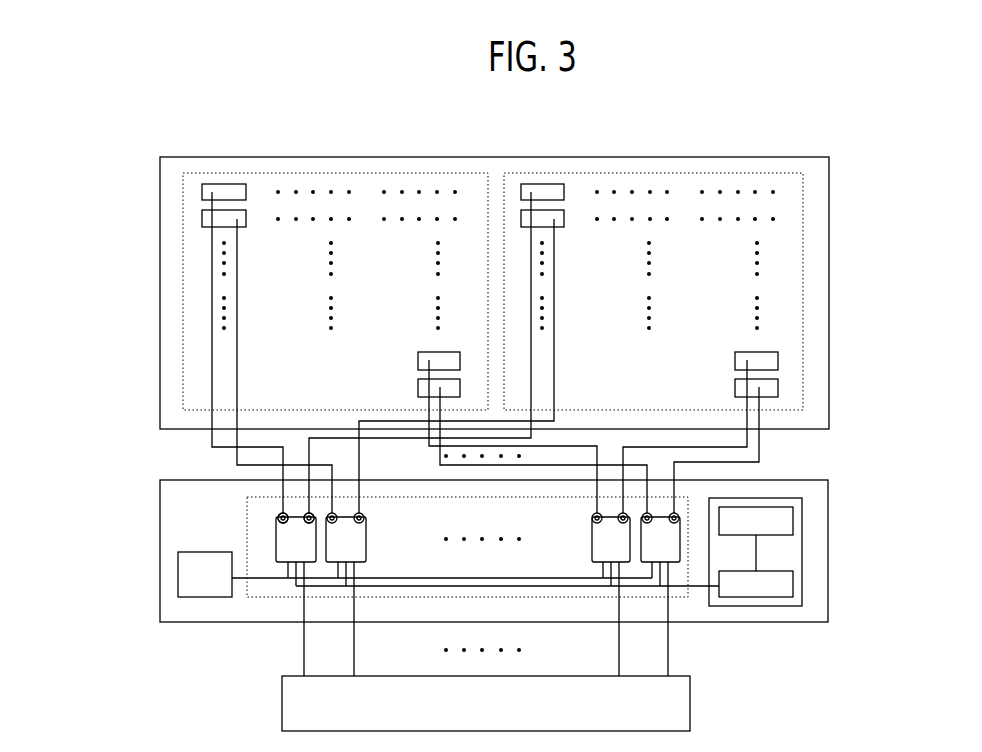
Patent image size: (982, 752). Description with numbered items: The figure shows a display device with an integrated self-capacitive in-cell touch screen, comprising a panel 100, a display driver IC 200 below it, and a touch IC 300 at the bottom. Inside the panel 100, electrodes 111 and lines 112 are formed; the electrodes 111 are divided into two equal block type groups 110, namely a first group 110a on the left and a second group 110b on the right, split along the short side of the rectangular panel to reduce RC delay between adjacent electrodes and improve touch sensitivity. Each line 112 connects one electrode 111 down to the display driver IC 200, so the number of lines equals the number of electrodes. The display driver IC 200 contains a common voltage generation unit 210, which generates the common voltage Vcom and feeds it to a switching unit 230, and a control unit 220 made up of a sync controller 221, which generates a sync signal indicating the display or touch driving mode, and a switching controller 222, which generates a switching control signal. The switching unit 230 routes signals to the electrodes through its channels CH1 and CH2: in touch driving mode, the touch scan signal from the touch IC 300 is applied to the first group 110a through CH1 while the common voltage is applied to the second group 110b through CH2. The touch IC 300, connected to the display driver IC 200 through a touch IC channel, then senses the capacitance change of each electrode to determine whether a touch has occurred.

The panel 100 is at (829, 316).
The block type group 110 is at (571, 260).
The first group 110a is at (480, 175).
The second group 110b is at (803, 203).
The electrodes 111 is at (767, 360).
The lines 112 is at (760, 403).
The display driver IC 200 is at (828, 485).
The common voltage generation unit 210 is at (178, 568).
The control unit 220 is at (827, 552).
The sync controller 221 is at (793, 522).
The switching controller 222 is at (793, 585).
The switching unit 230 is at (276, 547).
The touch IC 300 is at (690, 703).
The CH1 of the switching unit CH1 is at (279, 514).
The CH2 of the switching unit CH2 is at (305, 514).